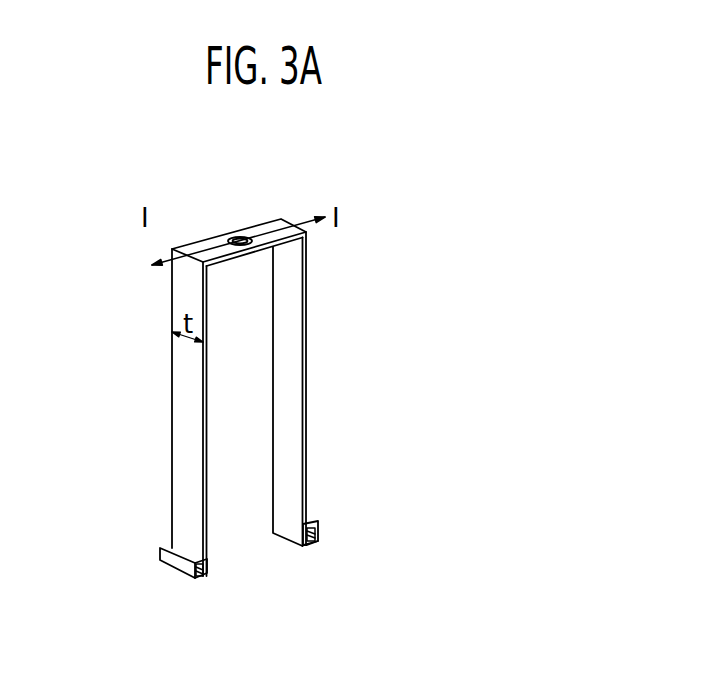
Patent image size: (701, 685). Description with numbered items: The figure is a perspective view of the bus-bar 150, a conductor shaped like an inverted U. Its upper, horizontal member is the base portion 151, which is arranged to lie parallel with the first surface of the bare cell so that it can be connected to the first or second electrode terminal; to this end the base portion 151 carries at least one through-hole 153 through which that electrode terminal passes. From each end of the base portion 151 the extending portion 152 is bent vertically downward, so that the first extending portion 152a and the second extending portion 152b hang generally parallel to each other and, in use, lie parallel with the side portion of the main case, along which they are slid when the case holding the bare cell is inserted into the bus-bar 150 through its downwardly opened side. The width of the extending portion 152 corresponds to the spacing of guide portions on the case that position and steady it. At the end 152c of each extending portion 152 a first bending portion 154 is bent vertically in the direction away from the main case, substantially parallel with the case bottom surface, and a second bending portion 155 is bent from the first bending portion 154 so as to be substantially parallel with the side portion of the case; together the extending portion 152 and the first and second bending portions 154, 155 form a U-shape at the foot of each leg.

The bus-bar 150 is at (128, 175).
The base portion 151 is at (274, 226).
The extending portion 152 is at (86, 377).
The first extending portion 152a is at (183, 385).
The second extending portion 152b is at (287, 422).
The end of the extending portion 152c is at (205, 561).
The through-hole 153 is at (236, 238).
The first bending portion 154 is at (205, 578).
The second bending portion 155 is at (170, 566).